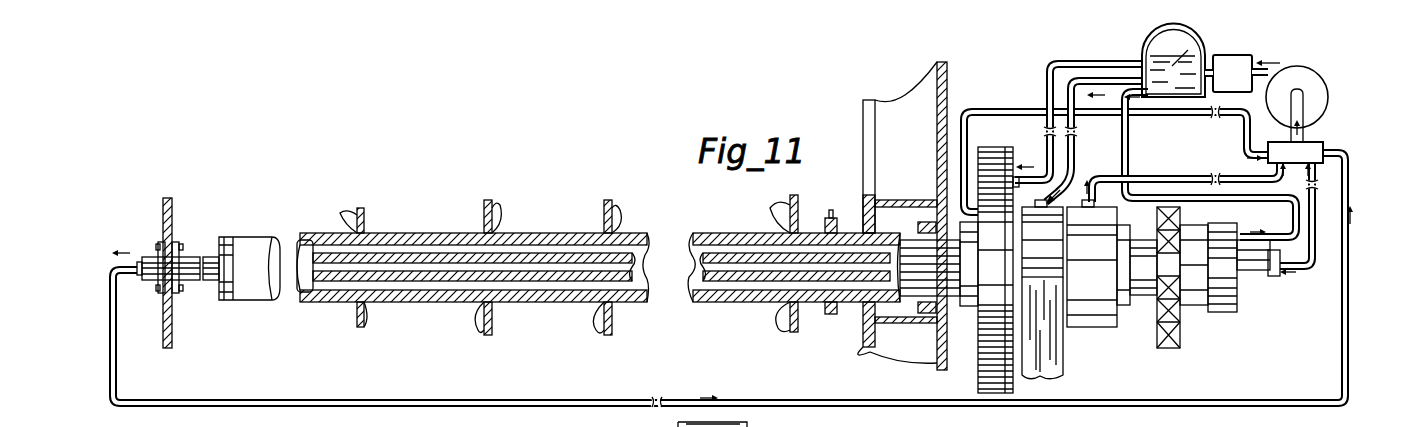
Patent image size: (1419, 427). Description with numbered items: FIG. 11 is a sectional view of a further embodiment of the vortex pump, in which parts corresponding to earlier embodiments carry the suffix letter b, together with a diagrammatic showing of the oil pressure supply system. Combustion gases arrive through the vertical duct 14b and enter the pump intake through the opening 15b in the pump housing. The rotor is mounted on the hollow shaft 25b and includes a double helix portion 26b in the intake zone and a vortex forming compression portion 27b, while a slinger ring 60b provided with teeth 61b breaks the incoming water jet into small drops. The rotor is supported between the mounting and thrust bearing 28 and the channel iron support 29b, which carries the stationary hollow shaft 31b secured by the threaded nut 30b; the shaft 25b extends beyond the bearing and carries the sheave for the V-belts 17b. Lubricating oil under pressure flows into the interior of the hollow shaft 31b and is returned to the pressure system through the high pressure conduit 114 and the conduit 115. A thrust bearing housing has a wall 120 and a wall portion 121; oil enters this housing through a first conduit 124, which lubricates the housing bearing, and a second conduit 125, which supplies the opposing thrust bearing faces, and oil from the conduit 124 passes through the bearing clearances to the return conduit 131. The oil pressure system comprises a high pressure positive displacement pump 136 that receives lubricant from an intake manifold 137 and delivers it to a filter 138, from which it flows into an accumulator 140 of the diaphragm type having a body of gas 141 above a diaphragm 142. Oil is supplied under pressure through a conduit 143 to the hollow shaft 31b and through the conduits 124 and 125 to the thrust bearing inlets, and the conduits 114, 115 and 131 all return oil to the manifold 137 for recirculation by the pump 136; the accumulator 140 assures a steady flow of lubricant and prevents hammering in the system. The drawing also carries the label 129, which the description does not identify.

The vertical duct 14b is at (945, 75).
The opening in pump housing 15b is at (866, 130).
The V-belts 17b is at (1175, 340).
The hollow shaft 25b is at (320, 302).
The double helix portion 26b is at (797, 215).
The vortex forming compression portion 27b is at (492, 222).
The mounting and thrust bearing 28 is at (1064, 353).
The channel iron support 29b is at (165, 325).
The threaded nut 30b is at (172, 240).
The stationary hollow shaft 31b is at (205, 283).
The slinger ring 60b is at (795, 325).
The teeth 61b is at (835, 316).
The high pressure conduit 114 is at (1318, 268).
The conduit 115 is at (1347, 295).
The wall 120 is at (738, 419).
The wall portion 121 is at (1007, 132).
The first conduit 124 is at (1140, 112).
The second conduit 125 is at (1043, 66).
The conduit 129 is at (1074, 162).
The return conduit 131 is at (1203, 176).
The high pressure positive displacement pump 136 is at (1326, 98).
The intake manifold 137 is at (1320, 147).
The filter 138 is at (1280, 63).
The accumulator 140 is at (1240, 62).
The body of gas 141 is at (1160, 46).
The diaphragm 142 is at (1195, 58).
The conduit 143 is at (1122, 166).